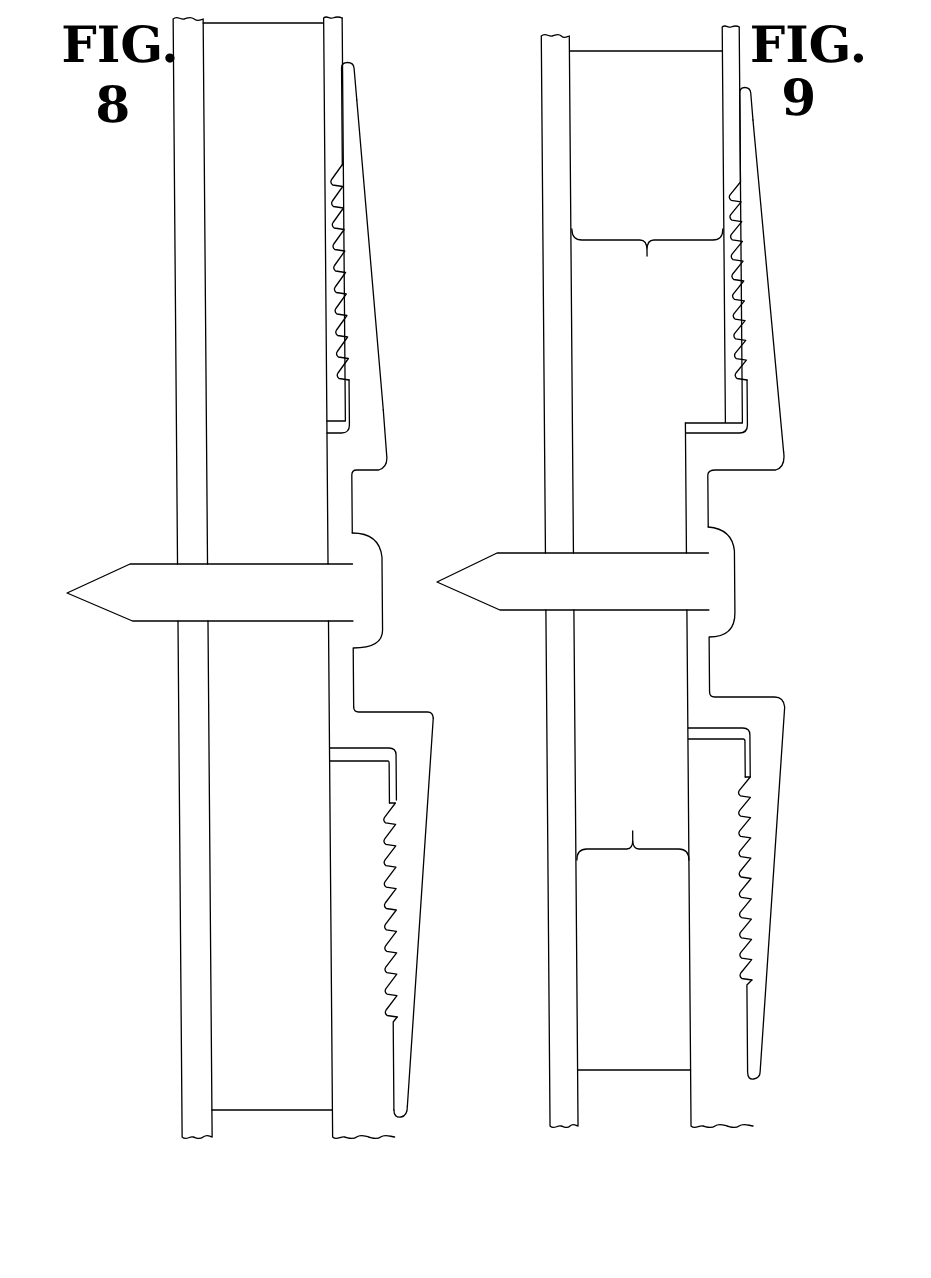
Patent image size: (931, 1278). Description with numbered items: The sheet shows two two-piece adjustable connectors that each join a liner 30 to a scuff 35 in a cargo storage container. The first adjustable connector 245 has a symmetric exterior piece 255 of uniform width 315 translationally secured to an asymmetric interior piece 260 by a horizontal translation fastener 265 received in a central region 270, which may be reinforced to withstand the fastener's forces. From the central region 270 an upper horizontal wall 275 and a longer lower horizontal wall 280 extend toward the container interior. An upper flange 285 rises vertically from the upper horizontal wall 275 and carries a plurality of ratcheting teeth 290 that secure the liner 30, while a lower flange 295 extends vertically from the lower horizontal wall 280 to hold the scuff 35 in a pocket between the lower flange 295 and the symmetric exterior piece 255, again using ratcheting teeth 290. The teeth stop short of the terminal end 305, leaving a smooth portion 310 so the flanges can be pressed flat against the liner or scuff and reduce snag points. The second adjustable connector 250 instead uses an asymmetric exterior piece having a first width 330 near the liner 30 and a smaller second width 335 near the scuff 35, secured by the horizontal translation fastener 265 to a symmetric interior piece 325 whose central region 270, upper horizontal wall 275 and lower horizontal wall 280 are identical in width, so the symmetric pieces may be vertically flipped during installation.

In FIG. 8, the liner 30 is at (329, 97).
In FIG. 9, the liner 30 is at (739, 108).
In FIG. 8, the scuff 35 is at (334, 1066).
In FIG. 9, the scuff 35 is at (721, 1043).
In FIG. 8, the first adjustable connector 245 is at (153, 205).
In FIG. 9, the second adjustable connector 250 is at (519, 75).
In FIG. 8, the symmetric exterior piece 255 is at (228, 356).
In FIG. 8, the asymmetric interior piece 260 is at (384, 442).
In FIG. 8, the horizontal translation fastener 265 is at (216, 606).
In FIG. 9, the horizontal translation fastener 265 is at (573, 581).
In FIG. 8, the central region 270 is at (334, 546).
In FIG. 9, the central region 270 is at (695, 655).
In FIG. 8, the upper horizontal wall 275 is at (358, 452).
In FIG. 9, the upper horizontal wall 275 is at (738, 450).
In FIG. 8, the lower horizontal wall 280 is at (380, 728).
In FIG. 9, the lower horizontal wall 280 is at (736, 702).
In FIG. 8, the upper flange 285 is at (362, 328).
In FIG. 8, the ratcheting teeth 290 is at (340, 185).
In FIG. 9, the ratcheting teeth 290 is at (740, 581).
In FIG. 8, the lower flange 295 is at (405, 898).
In FIG. 8, the terminal end 305 is at (398, 1110).
In FIG. 8, the smooth portion 310 is at (388, 1060).
In FIG. 8, the uniform width 315 is at (294, 263).
In FIG. 9, the symmetric interior piece 325 is at (677, 164).
In FIG. 9, the first width 330 is at (647, 259).
In FIG. 9, the second width 335 is at (632, 828).